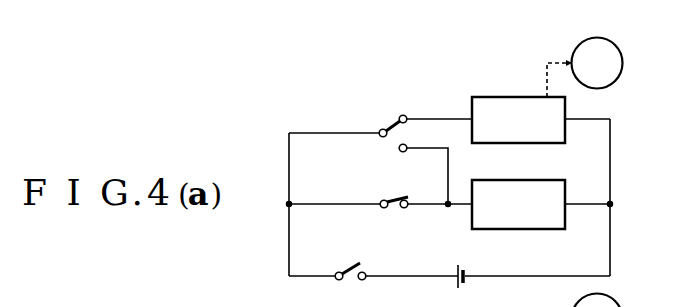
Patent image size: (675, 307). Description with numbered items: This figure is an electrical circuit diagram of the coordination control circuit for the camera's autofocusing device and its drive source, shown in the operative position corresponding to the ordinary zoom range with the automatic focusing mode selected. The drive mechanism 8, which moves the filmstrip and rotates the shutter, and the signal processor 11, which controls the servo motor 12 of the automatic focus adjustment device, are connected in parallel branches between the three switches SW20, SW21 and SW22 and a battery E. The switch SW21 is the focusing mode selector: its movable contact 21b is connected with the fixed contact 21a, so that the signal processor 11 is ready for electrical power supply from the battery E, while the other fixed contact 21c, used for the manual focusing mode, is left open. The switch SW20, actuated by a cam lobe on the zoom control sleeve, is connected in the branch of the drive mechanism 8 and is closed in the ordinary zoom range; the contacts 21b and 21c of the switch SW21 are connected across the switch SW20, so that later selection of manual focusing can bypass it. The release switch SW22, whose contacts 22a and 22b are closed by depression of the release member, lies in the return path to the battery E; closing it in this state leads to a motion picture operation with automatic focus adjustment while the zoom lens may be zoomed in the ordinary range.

The drive mechanism 8 is at (518, 204).
The signal processor 11 is at (518, 120).
The servo motor 12 is at (617, 44).
The fixed contact 21a is at (404, 113).
The movable contact 21b is at (388, 129).
The fixed contact 21c is at (406, 152).
The contact of switch SW22 22a is at (352, 264).
The contact of switch SW22 22b is at (366, 271).
The switch SW20 is at (416, 240).
The switch SW21 is at (414, 137).
The switch SW22 is at (387, 269).
The battery E is at (462, 258).